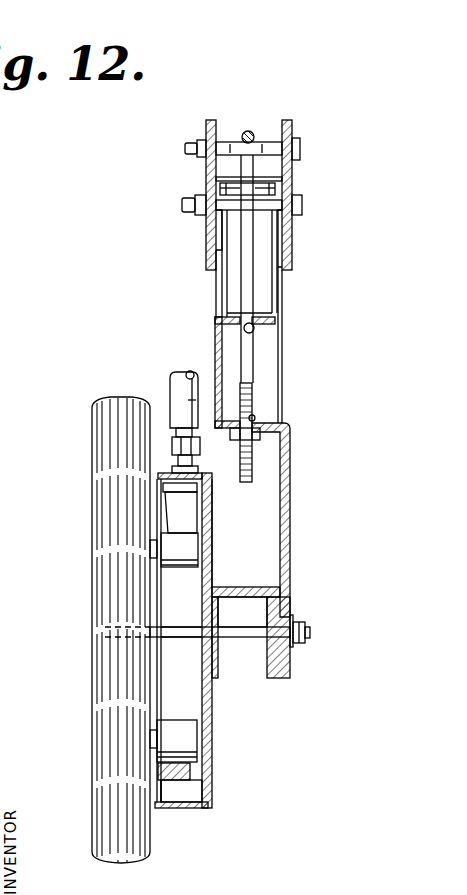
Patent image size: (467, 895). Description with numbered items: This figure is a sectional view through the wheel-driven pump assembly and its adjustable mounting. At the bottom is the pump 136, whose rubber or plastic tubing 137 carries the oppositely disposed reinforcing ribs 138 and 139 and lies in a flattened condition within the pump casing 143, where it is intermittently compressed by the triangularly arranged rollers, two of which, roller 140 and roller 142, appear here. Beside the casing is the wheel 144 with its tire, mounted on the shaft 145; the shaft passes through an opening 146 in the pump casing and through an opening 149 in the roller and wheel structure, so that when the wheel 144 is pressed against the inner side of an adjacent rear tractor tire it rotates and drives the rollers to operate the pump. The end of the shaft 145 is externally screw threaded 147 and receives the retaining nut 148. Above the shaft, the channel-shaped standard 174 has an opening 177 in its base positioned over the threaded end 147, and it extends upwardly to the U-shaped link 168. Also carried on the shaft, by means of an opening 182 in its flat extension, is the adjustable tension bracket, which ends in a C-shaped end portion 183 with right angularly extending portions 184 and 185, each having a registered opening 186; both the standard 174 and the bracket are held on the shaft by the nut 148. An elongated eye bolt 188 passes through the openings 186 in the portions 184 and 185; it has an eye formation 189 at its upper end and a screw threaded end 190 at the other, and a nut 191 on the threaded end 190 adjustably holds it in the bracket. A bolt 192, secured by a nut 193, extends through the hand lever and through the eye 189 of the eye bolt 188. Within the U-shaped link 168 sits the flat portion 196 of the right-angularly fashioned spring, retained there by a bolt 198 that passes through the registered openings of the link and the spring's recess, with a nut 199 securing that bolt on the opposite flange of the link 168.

The eye formation 189 is at (250, 131).
The nut 193 is at (201, 140).
The bolt 192 is at (300, 143).
The U-shaped link 168 is at (222, 188).
The flat portion of spring 196 is at (278, 192).
The bolt 198 is at (302, 205).
The nut 199 is at (199, 216).
The eye bolt 188 is at (241, 277).
The right angularly extending portion 184 is at (277, 312).
The C-shaped end portion 183 is at (215, 348).
The opening 186 is at (254, 329).
The channel-shaped standard 174 is at (286, 396).
The wheel 144 is at (127, 425).
The right angularly extending portion 185 is at (266, 432).
The nut 191 is at (262, 446).
The screw threaded end 190 is at (262, 482).
The roller 140 is at (190, 552).
The pump 136 is at (214, 566).
The opening 146 is at (205, 632).
The shaft 145 is at (271, 626).
The opening 182 is at (296, 618).
The externally screw threaded end 147 is at (310, 633).
The retaining nut 148 is at (310, 650).
The opening 149 is at (148, 632).
The opening 177 is at (213, 644).
The pump casing 143 is at (213, 702).
The roller 142 is at (190, 744).
The reinforcing rib 138 is at (192, 773).
The tubing 137 is at (184, 788).
The reinforcing rib 139 is at (161, 780).